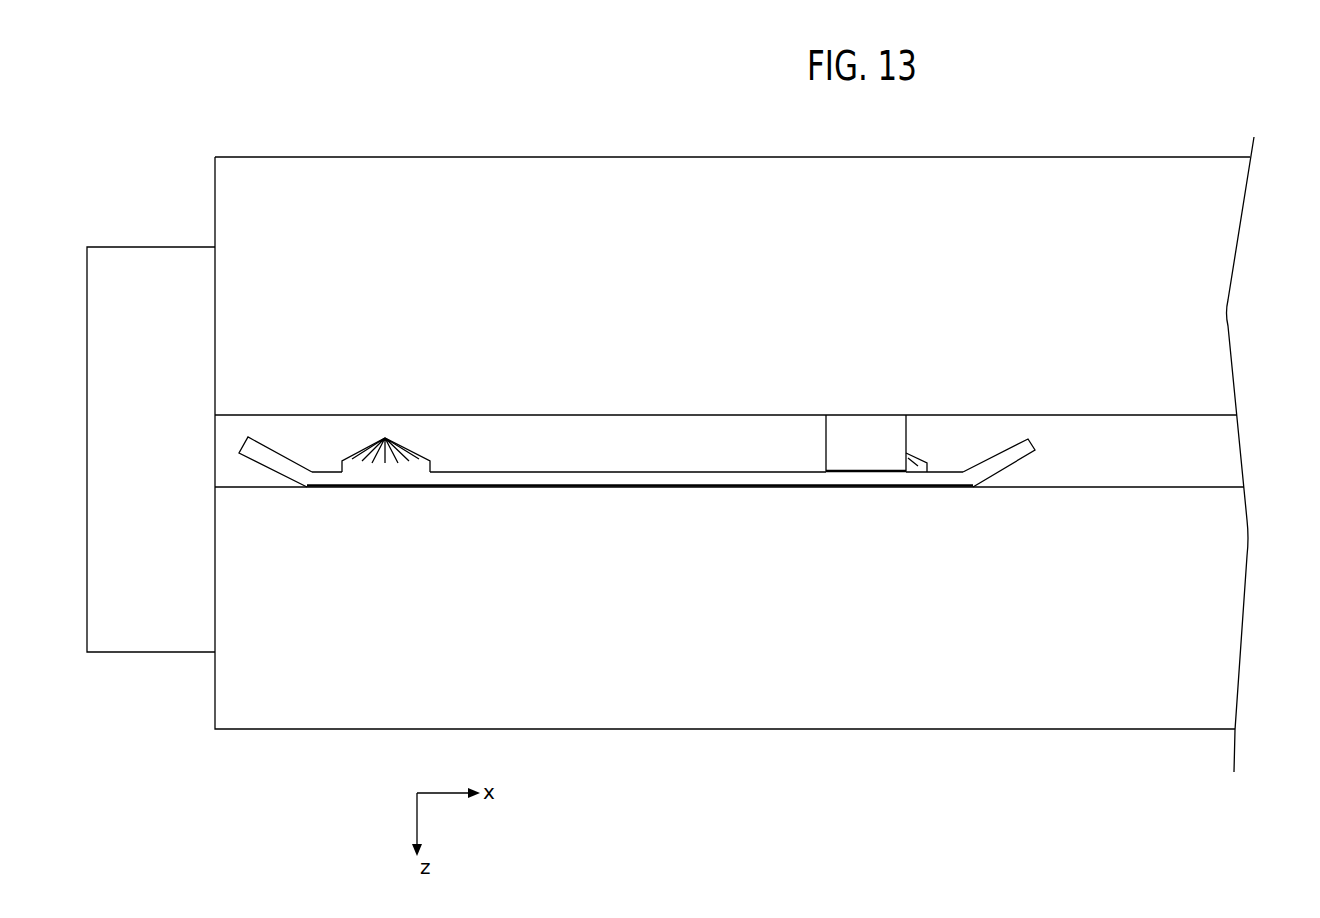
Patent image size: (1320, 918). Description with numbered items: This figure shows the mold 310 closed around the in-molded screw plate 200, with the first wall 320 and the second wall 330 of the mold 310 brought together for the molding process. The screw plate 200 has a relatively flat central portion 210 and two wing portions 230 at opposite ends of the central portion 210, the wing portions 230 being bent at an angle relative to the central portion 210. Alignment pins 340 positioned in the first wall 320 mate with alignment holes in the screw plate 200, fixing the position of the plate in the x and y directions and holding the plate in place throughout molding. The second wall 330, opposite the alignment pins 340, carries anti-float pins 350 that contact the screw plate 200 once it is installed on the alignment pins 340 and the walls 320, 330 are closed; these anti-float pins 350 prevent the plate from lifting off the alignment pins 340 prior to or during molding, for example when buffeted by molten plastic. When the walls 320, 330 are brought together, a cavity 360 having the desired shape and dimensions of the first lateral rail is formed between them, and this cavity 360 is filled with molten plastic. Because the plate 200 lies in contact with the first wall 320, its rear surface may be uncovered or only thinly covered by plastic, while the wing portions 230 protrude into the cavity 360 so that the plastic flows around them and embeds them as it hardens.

The screw plate 200 is at (473, 473).
The central portion 210 is at (727, 478).
The wing portions 230 is at (265, 458).
The mold 310 is at (1114, 141).
The first wall 320 is at (562, 702).
The second wall 330 is at (702, 188).
The alignment pins 340 is at (385, 464).
The anti-float pins 350 is at (883, 450).
The cavity 360 is at (1145, 455).